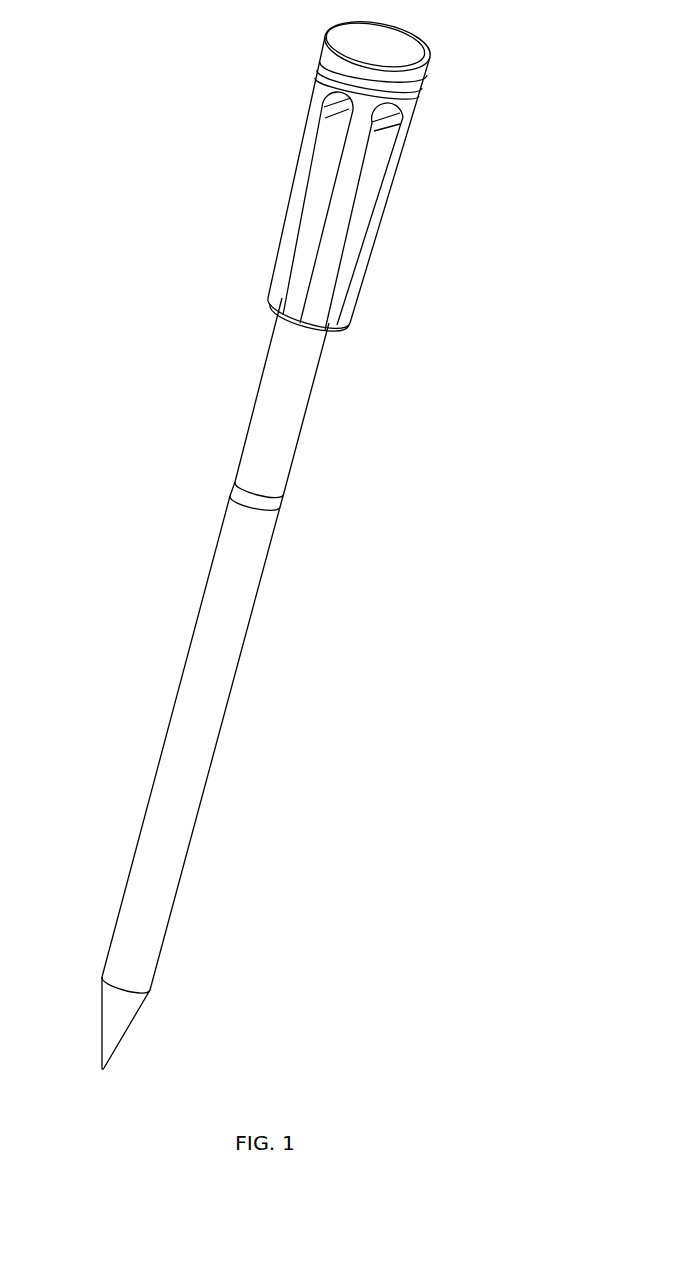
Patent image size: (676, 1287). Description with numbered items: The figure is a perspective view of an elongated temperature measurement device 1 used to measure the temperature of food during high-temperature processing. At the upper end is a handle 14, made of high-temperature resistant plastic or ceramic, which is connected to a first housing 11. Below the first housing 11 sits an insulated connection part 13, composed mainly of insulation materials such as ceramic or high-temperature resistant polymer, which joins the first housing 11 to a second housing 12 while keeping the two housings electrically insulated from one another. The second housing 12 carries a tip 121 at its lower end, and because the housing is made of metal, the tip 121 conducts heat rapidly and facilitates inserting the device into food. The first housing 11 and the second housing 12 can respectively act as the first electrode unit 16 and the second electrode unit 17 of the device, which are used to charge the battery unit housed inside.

The temperature measurement device 1 is at (170, 232).
The first housing 11 is at (373, 396).
The second housing 12 is at (307, 783).
The insulated connection part 13 is at (232, 483).
The handle 14 is at (380, 233).
The first electrode unit 16 is at (297, 442).
The second electrode unit 17 is at (197, 792).
The tip 121 is at (110, 1020).